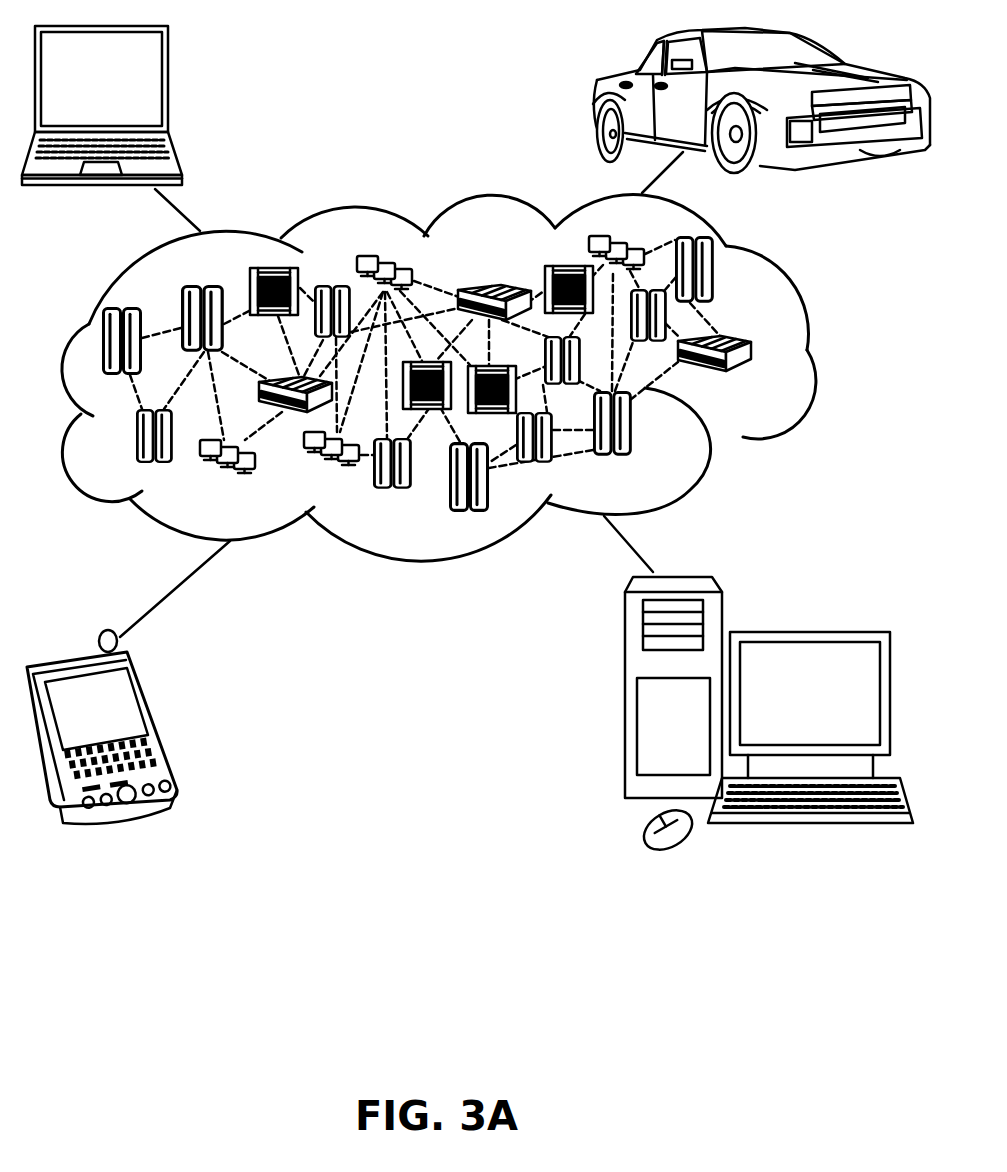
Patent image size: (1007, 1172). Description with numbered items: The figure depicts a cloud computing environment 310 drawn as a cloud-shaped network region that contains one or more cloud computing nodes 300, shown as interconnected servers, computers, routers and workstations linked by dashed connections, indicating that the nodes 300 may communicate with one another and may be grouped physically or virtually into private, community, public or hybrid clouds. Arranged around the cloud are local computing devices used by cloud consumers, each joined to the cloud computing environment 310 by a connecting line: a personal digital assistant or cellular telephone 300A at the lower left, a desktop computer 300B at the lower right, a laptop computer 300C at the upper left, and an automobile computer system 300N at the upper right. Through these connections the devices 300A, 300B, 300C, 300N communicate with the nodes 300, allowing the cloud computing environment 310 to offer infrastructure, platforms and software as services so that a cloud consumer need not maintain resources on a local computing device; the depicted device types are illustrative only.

The cloud computing nodes 300 is at (750, 380).
The cloud computing environment 310 is at (808, 352).
The personal digital assistant (PDA) or cellular telephone 300A is at (160, 723).
The desktop computer 300B is at (810, 632).
The laptop computer 300C is at (170, 87).
The automobile computer system 300N is at (597, 103).